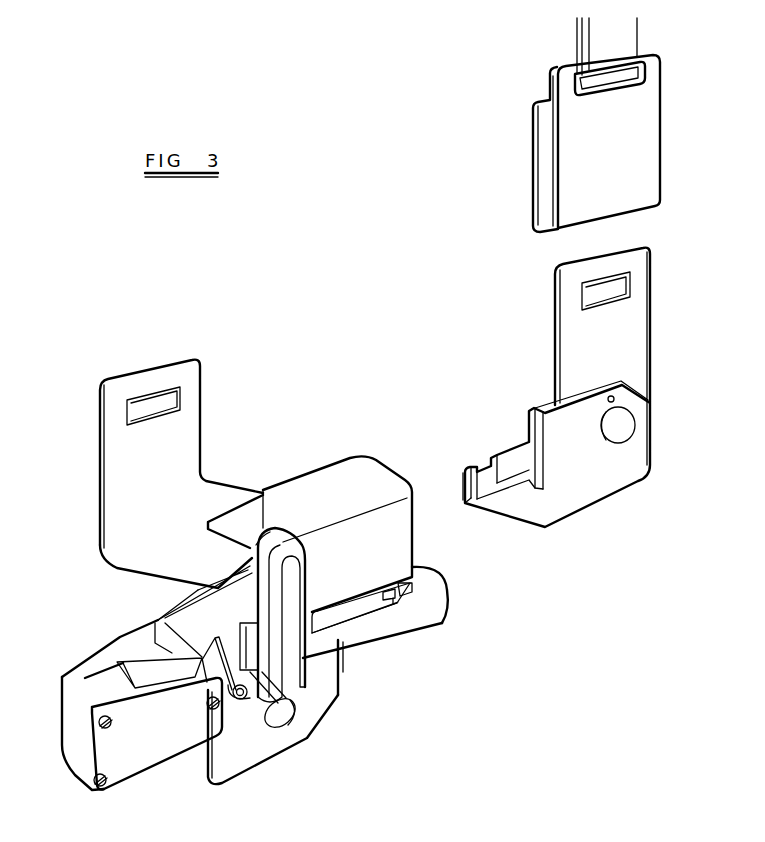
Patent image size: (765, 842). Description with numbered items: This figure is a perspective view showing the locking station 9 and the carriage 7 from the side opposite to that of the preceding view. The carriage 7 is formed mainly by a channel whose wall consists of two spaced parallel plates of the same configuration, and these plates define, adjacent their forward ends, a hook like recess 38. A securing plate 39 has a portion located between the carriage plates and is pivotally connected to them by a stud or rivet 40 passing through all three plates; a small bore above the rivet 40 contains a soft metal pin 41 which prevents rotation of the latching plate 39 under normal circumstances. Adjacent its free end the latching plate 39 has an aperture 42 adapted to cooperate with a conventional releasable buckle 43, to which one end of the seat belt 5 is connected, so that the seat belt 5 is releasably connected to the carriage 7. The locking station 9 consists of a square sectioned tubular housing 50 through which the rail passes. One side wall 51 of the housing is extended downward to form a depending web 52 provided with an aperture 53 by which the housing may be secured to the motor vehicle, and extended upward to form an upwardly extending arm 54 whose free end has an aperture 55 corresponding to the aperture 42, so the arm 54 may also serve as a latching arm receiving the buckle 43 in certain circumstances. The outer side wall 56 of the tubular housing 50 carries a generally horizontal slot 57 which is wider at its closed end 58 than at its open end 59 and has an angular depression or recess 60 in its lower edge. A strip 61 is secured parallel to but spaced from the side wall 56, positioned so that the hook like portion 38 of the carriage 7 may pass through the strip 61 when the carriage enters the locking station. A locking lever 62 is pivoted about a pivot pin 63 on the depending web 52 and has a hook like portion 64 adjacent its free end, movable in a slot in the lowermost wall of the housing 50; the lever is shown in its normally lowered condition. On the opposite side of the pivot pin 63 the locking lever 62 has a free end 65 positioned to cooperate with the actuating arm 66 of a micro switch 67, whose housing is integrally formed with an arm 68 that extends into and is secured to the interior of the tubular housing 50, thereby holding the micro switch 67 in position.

The seat belt 5 is at (631, 37).
The releasable buckle 43 is at (650, 140).
The aperture 42 is at (620, 285).
The securing plate 39 is at (577, 333).
The carriage 7 is at (536, 380).
The soft metal pin 41 is at (614, 397).
The stud or rivet 40 is at (617, 428).
The hook like recess 38 is at (506, 450).
The aperture 55 is at (155, 403).
The upwardly extending arm 54 is at (228, 495).
The side wall 51 is at (253, 547).
The locking station 9 is at (319, 433).
The tubular housing 50 is at (355, 482).
The outer side wall 56 is at (398, 532).
The strip 61 is at (290, 580).
The open end 59 is at (413, 577).
The closed end 58 is at (320, 610).
The slot 57 is at (348, 603).
The hook like portion 64 is at (430, 597).
The angular depression or recess 60 is at (393, 604).
The arm 68 is at (190, 607).
The free end 65 is at (168, 633).
The actuating arm 66 is at (120, 633).
The depending web 52 is at (335, 695).
The aperture 53 is at (297, 707).
The locking lever 62 is at (273, 707).
The pivot pin 63 is at (243, 700).
The micro switch 67 is at (150, 745).